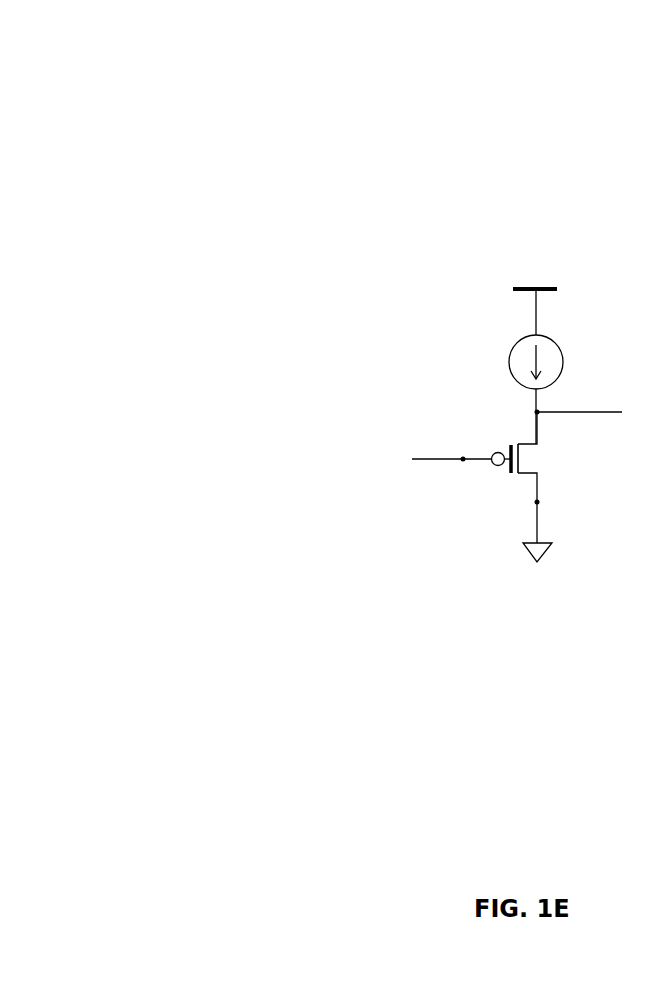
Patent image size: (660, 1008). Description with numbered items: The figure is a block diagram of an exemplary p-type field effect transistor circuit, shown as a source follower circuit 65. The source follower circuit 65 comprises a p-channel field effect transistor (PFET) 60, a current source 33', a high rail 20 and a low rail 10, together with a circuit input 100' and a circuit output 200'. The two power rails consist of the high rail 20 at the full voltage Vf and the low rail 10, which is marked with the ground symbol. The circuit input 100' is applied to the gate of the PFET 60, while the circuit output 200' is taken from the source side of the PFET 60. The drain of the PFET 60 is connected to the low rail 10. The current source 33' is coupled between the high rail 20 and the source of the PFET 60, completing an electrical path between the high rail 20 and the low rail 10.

The source follower circuit 65 is at (122, 102).
The high rail 20 is at (556, 286).
The current source 33' is at (566, 385).
The p-channel field effect transistor 60 is at (510, 445).
The circuit input 100' is at (448, 471).
The circuit output 200' is at (588, 419).
The low rail 10 is at (518, 553).